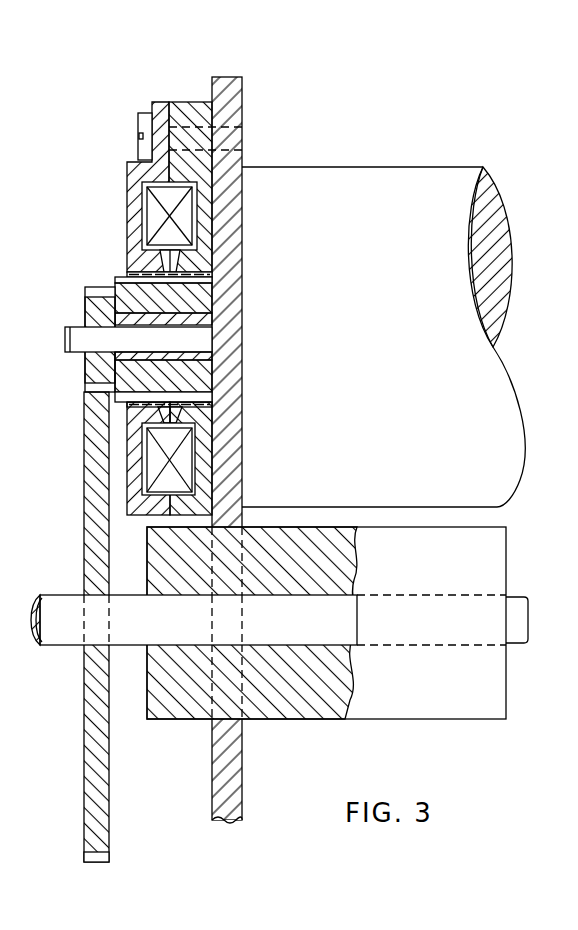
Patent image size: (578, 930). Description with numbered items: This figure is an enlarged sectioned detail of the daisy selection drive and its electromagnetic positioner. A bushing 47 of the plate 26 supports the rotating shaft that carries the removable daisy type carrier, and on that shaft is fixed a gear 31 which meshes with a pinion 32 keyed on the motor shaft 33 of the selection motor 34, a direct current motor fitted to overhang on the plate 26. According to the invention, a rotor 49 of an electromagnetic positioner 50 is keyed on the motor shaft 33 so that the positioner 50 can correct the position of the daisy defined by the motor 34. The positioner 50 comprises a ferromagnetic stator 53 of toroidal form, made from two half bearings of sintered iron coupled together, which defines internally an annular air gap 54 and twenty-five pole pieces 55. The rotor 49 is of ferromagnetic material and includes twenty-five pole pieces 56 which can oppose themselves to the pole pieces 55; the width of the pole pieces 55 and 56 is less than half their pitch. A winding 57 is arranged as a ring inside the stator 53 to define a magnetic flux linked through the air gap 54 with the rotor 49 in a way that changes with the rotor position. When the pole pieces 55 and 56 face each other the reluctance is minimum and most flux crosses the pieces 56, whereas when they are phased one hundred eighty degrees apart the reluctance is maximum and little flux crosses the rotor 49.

The plate 26 is at (252, 764).
The gear 31 is at (88, 523).
The pinion 32 is at (97, 288).
The motor shaft 33 is at (80, 335).
The selection motor 34 is at (407, 178).
The bushing 47 is at (384, 706).
The rotor 49 is at (200, 303).
The electromagnetic positioner 50 is at (122, 141).
The ferromagnetic stator 53 is at (203, 162).
The annular air gap 54 is at (180, 247).
The pole pieces 55 is at (190, 430).
The pole pieces 56 is at (205, 396).
The winding 57 is at (187, 477).